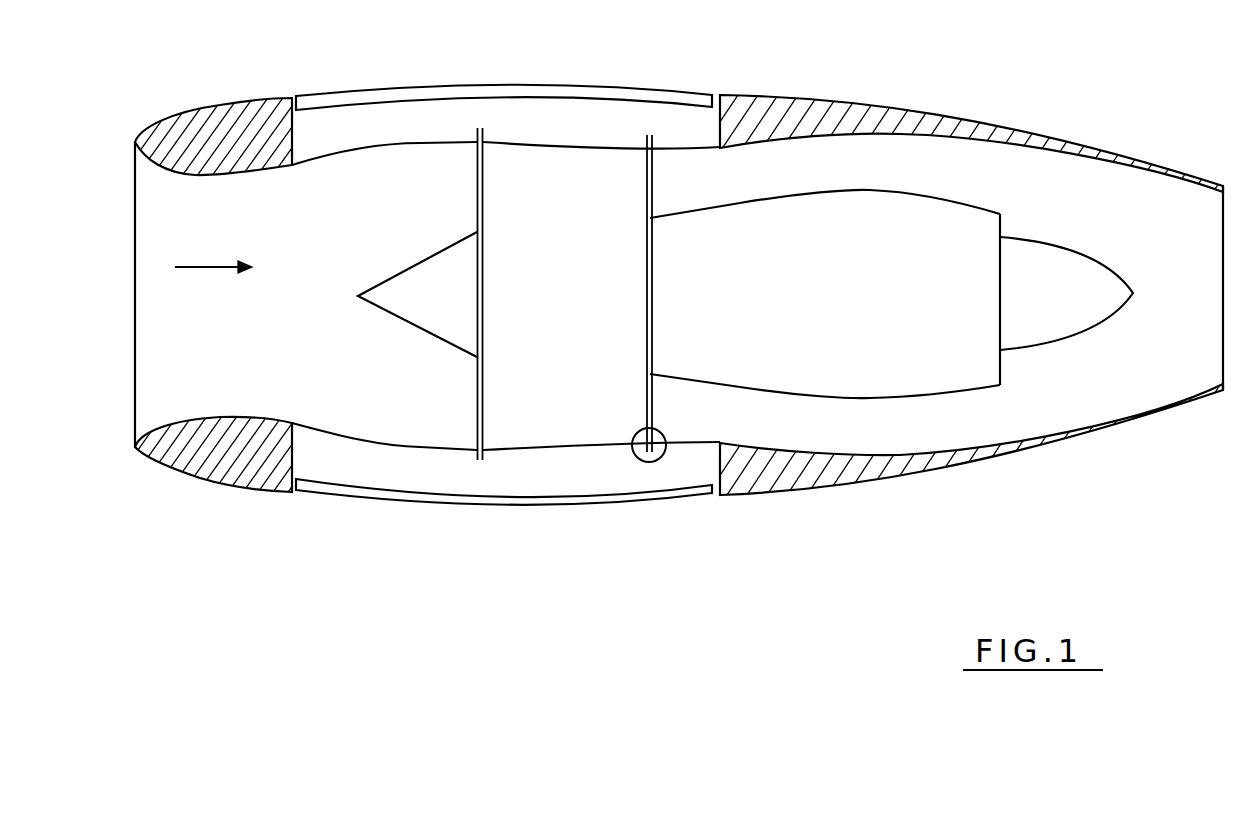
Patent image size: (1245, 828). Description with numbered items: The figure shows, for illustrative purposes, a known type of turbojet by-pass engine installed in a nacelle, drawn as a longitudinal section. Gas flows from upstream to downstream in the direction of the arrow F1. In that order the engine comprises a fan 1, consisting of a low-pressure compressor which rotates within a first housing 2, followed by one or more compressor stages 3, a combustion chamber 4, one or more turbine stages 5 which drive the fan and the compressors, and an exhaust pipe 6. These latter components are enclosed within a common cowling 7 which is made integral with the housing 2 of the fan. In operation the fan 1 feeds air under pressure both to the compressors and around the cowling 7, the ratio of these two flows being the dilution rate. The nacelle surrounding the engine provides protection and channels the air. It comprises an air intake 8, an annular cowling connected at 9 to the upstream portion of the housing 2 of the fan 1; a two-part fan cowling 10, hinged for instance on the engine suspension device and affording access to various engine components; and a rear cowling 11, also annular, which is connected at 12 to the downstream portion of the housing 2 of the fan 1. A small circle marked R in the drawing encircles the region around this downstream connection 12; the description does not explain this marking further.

The fan 1 is at (578, 272).
The first housing 2 is at (572, 447).
The compressor stages 3 is at (697, 324).
The combustion chamber 4 is at (725, 324).
The turbine stages 5 is at (840, 324).
The exhaust pipe 6 is at (980, 323).
The common cowling 7 is at (985, 388).
The air intake 8 is at (245, 468).
The connection of air intake to housing 9 is at (480, 460).
The fan cowling 10 is at (373, 493).
The rear cowling 11 is at (925, 458).
The connection of rear cowling to housing 12 is at (647, 462).
The region of stator root R is at (662, 456).
The arrow indicating direction of gas flow F1 is at (213, 258).